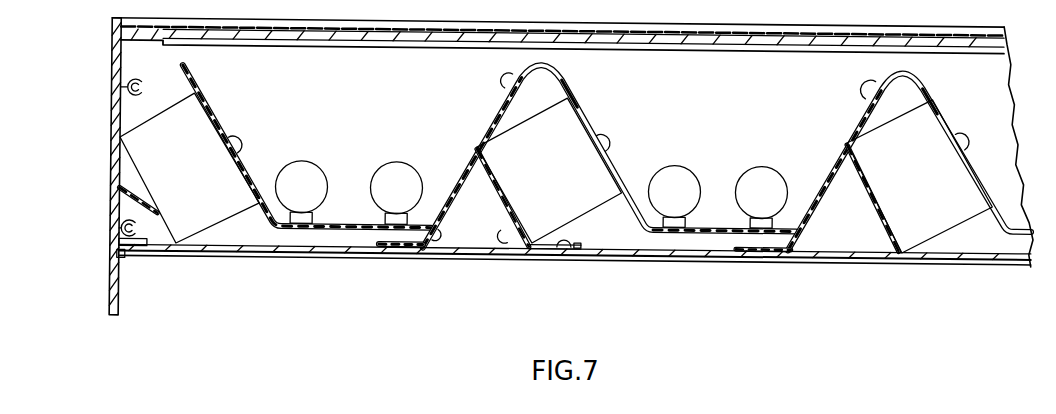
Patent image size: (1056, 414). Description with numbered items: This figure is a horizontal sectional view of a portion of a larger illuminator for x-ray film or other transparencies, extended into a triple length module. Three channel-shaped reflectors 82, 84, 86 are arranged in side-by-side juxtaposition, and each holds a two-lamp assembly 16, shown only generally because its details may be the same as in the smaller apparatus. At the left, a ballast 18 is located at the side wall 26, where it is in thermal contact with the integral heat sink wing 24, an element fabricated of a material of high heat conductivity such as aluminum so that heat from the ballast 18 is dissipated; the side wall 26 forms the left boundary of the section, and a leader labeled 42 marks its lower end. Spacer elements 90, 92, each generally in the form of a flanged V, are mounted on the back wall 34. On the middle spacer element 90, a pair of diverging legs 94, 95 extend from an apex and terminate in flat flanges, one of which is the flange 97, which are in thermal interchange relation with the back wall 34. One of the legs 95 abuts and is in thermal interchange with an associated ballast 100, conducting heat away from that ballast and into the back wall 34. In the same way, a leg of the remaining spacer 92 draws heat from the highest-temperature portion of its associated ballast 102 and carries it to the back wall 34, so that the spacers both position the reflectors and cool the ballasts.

The lamp assembly 16 is at (731, 225).
The ballast 18 is at (210, 230).
The heat sink wing 24 is at (128, 204).
The side wall 26 is at (103, 250).
The back wall 34 is at (622, 257).
The side wall 42 is at (117, 320).
The channel-shaped reflector 82 is at (292, 223).
The channel-shaped reflector 84 is at (700, 225).
The channel-shaped reflector 86 is at (983, 174).
The spacer element 90 is at (485, 219).
The spacer element 92 is at (868, 217).
The leg 94 is at (433, 254).
The leg 95 is at (518, 243).
The flat flange 97 is at (573, 257).
The ballast 100 is at (563, 128).
The ballast 102 is at (932, 123).